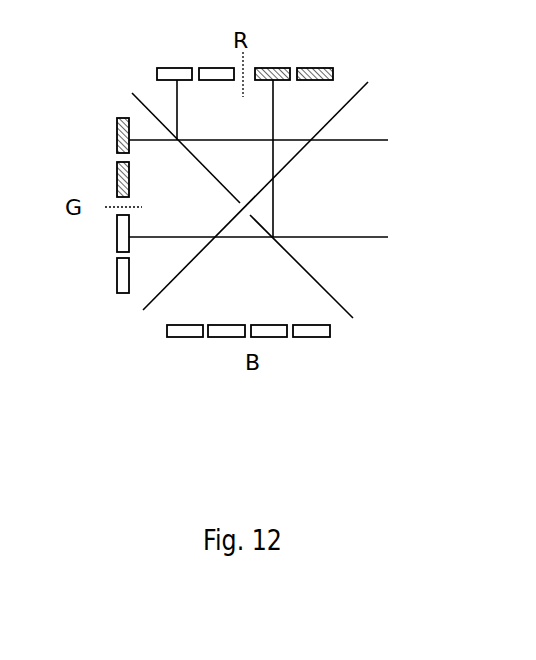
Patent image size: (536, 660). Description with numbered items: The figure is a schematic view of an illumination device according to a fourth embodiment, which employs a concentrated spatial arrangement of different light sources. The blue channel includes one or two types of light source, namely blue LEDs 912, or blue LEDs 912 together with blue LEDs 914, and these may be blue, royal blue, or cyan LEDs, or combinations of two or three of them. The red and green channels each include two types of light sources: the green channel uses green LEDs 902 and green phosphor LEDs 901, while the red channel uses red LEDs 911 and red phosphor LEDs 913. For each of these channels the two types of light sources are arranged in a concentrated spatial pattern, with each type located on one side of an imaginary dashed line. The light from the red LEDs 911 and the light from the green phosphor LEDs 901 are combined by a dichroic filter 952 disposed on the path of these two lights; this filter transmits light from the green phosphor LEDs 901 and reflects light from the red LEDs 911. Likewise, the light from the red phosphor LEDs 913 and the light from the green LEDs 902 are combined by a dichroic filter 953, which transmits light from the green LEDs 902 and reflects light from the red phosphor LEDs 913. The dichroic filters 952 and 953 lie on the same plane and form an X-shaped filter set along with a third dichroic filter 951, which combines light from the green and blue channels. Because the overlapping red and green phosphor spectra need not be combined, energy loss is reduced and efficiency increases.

The green phosphor LEDs 901 is at (117, 140).
The green LEDs 902 is at (117, 278).
The red LEDs 911 is at (183, 68).
The blue LEDs 912 is at (314, 338).
The red phosphor LEDs 913 is at (321, 68).
The blue LEDs 914 is at (176, 338).
The third dichroic filter 951 is at (356, 98).
The dichroic filter 952 is at (137, 100).
The dichroic filter 953 is at (326, 292).